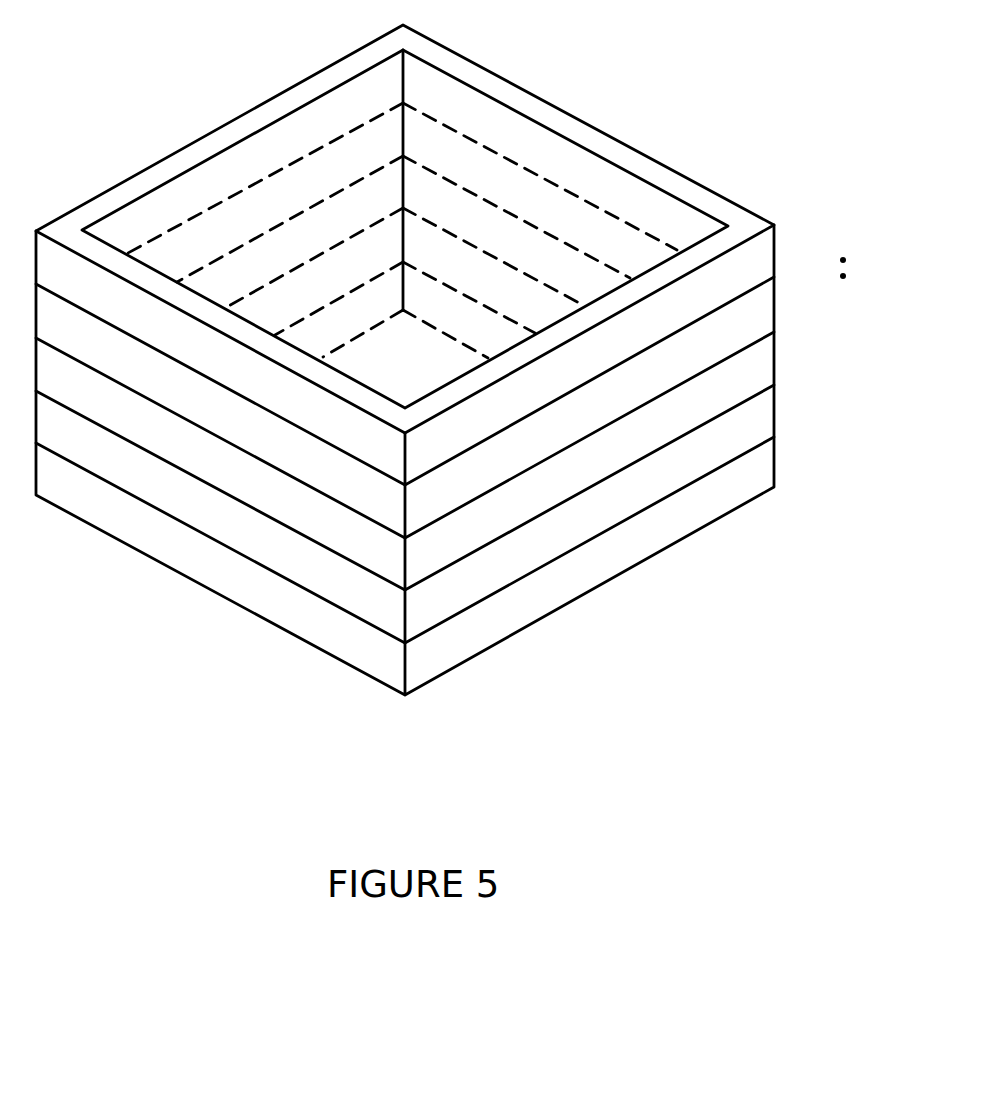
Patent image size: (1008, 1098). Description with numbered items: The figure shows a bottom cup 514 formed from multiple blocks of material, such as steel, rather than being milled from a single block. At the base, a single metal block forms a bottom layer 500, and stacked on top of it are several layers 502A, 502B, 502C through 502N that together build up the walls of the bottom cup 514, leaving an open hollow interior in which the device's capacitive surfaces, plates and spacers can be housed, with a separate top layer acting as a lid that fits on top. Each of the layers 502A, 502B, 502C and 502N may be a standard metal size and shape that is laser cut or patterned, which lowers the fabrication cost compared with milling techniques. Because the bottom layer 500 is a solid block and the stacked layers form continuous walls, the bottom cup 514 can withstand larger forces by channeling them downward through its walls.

The bottom layer 500 is at (762, 477).
The layer 502A is at (762, 422).
The layer 502B is at (762, 367).
The layer 502C is at (762, 318).
The layer 502N is at (762, 259).
The bottom cup 514 is at (453, 360).